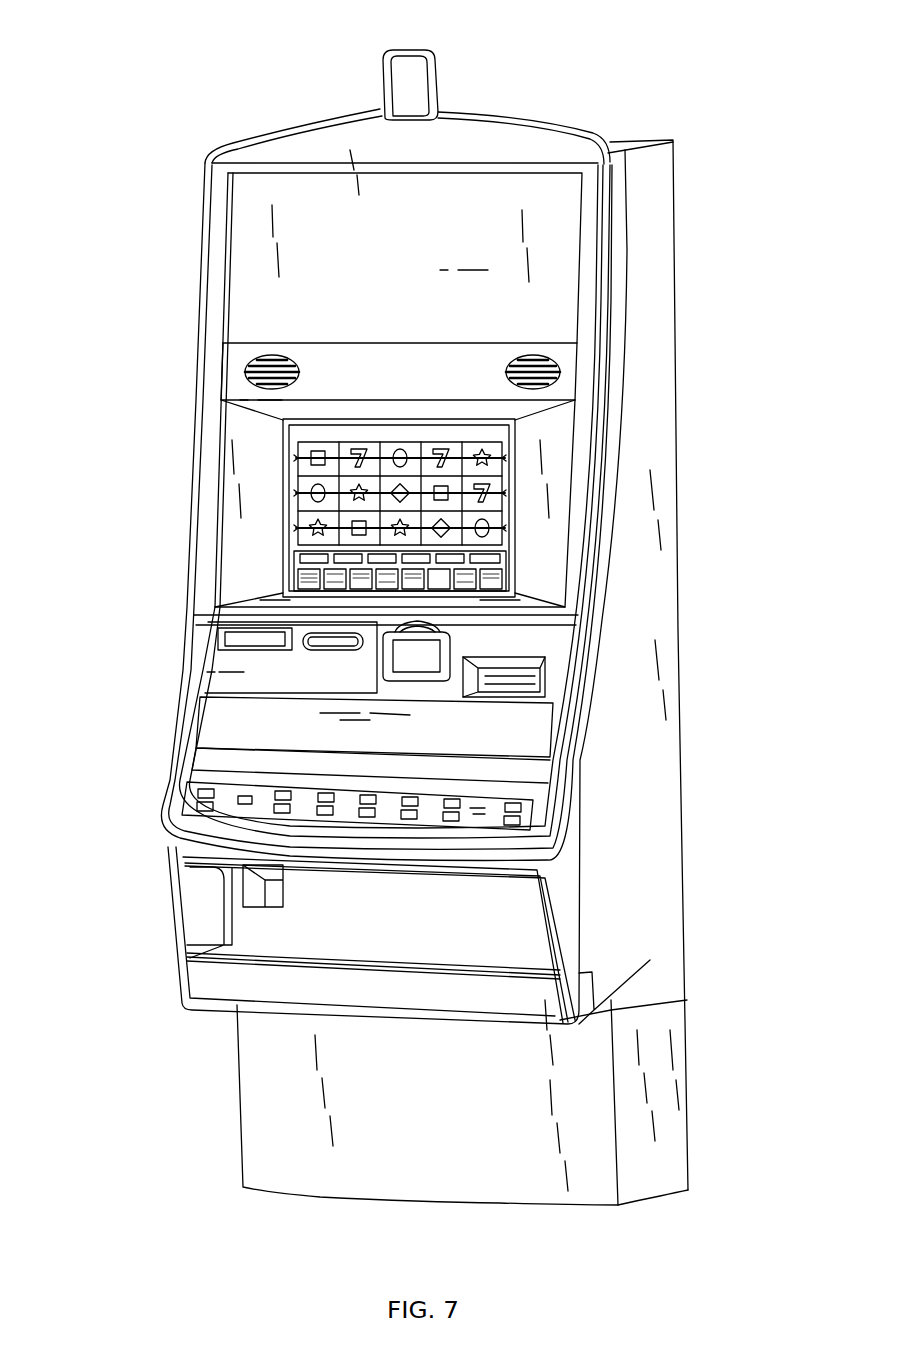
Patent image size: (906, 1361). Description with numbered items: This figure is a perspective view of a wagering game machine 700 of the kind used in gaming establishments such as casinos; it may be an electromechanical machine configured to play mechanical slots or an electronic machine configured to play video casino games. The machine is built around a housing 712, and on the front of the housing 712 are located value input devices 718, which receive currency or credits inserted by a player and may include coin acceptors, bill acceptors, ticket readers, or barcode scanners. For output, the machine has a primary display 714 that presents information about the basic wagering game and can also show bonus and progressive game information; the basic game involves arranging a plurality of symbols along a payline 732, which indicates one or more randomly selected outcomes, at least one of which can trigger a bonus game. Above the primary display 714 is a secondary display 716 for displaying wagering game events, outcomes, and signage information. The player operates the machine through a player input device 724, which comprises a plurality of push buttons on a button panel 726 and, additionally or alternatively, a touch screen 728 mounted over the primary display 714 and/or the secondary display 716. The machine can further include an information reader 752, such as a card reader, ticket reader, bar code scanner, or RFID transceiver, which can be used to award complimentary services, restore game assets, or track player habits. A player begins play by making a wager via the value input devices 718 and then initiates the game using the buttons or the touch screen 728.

The wagering game machine 700 is at (168, 14).
The housing 712 is at (665, 230).
The secondary display 716 is at (273, 254).
The payline 732 is at (287, 453).
The primary display 714 is at (273, 517).
The touch screen 728 is at (516, 582).
The value input devices 718 is at (553, 683).
The information reader 752 is at (303, 646).
The player input device 724 is at (492, 809).
The button panel 726 is at (180, 850).